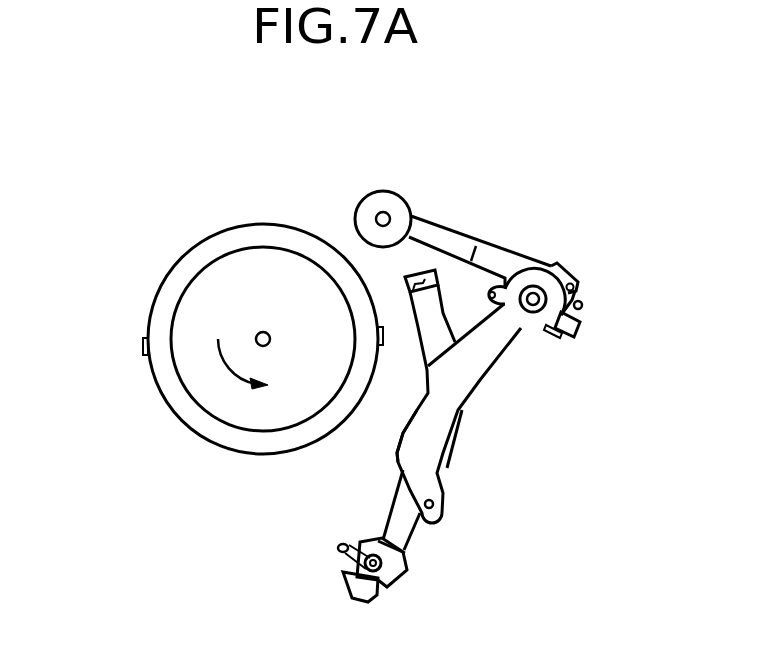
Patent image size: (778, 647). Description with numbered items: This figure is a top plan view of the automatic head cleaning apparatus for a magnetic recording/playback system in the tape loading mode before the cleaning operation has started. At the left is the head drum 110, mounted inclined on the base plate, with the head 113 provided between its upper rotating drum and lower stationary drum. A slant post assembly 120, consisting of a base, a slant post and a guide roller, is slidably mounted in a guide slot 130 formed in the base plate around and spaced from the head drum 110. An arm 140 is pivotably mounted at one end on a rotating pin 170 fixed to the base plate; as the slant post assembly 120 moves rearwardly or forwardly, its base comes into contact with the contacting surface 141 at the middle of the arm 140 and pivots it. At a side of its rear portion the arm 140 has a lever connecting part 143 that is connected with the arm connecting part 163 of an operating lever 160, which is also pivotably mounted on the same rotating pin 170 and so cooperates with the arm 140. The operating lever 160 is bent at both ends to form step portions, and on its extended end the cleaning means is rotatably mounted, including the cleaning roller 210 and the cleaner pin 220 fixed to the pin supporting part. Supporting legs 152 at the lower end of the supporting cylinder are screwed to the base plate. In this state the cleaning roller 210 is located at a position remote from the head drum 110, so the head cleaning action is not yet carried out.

The head drum 110 is at (190, 427).
The head 113 is at (145, 348).
The slant post assembly 120 is at (404, 568).
The guide slot 130 is at (446, 452).
The arm 140 is at (489, 375).
The contacting surface 141 is at (417, 411).
The lever connecting part 143 is at (583, 304).
The supporting leg 152 is at (574, 281).
The operating lever 160 is at (498, 260).
The arm connecting part 163 is at (588, 326).
The rotating pin 170 is at (533, 293).
The cleaning roller 210 is at (397, 199).
The cleaner pin 220 is at (378, 214).